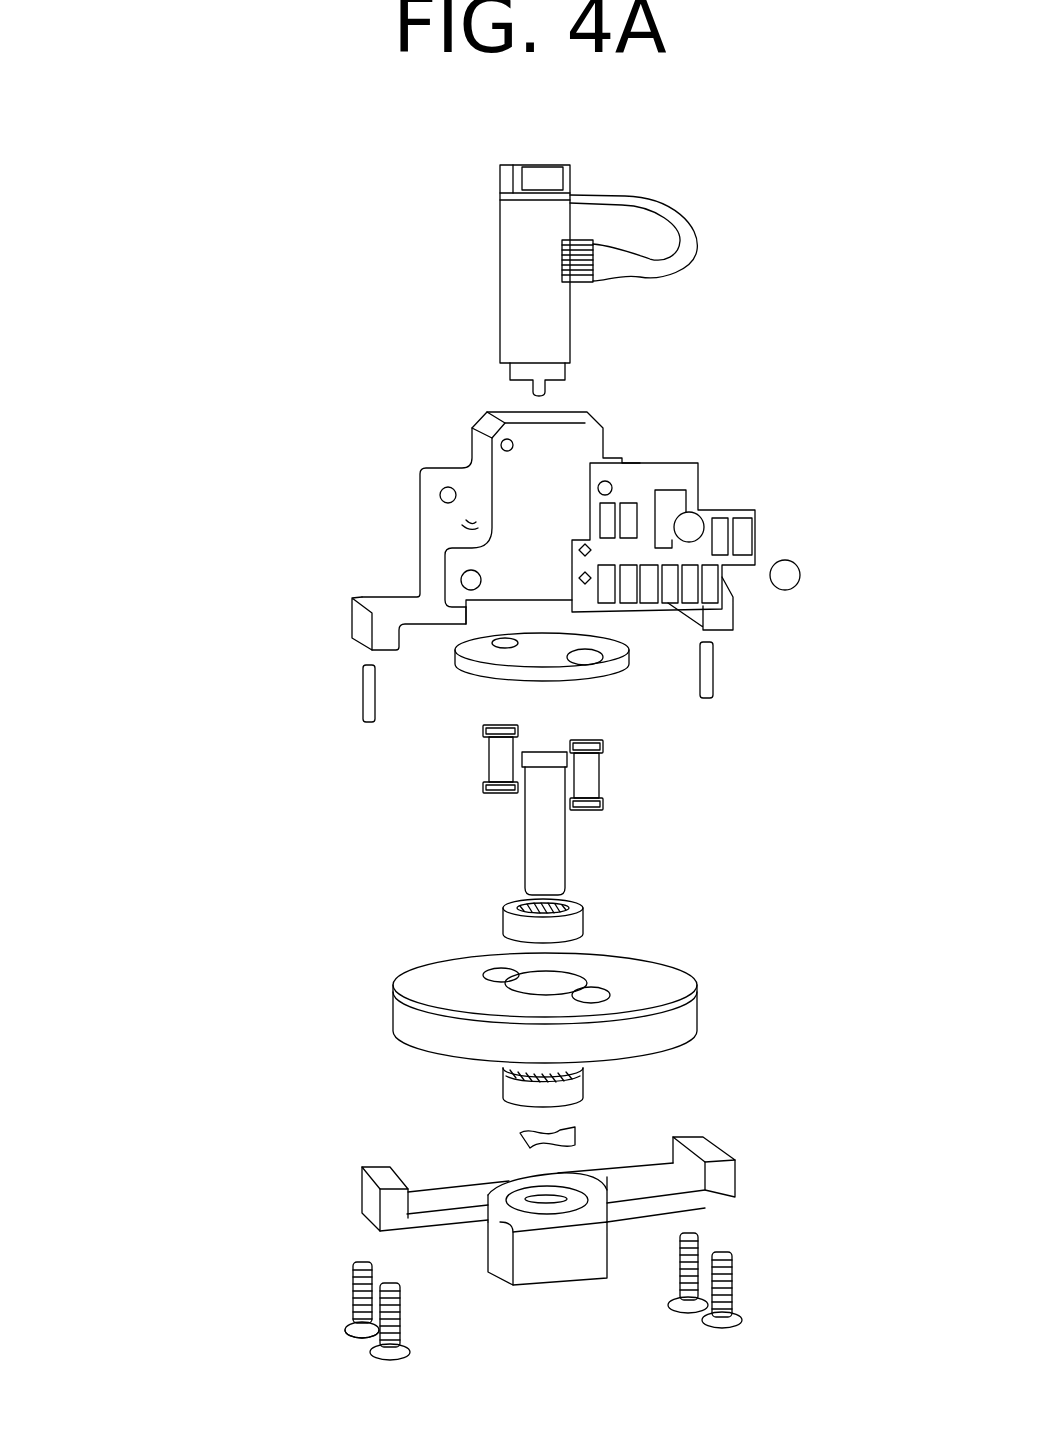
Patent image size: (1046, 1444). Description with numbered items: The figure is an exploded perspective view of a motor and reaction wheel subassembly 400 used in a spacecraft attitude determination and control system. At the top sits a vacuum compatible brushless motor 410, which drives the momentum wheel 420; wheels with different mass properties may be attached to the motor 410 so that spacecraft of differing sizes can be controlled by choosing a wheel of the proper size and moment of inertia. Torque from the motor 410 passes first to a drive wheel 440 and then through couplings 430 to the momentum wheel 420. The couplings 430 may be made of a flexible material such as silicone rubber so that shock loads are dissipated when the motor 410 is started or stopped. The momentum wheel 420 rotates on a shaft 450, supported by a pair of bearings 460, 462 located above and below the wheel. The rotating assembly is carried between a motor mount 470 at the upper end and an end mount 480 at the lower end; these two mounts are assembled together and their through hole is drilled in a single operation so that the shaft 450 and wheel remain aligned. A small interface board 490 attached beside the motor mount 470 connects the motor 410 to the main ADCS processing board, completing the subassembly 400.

The motor and reaction wheel subassembly 400 is at (180, 235).
The vacuum compatible brushless motor 410 is at (510, 228).
The momentum wheel 420 is at (403, 1017).
The couplings 430 is at (494, 757).
The drive wheel 440 is at (475, 672).
The shaft 450 is at (558, 857).
The bearing 460 is at (588, 918).
The bearing 462 is at (513, 1087).
The motor mount 470 is at (415, 505).
The end mount 480 is at (373, 1195).
The interface board 490 is at (693, 488).